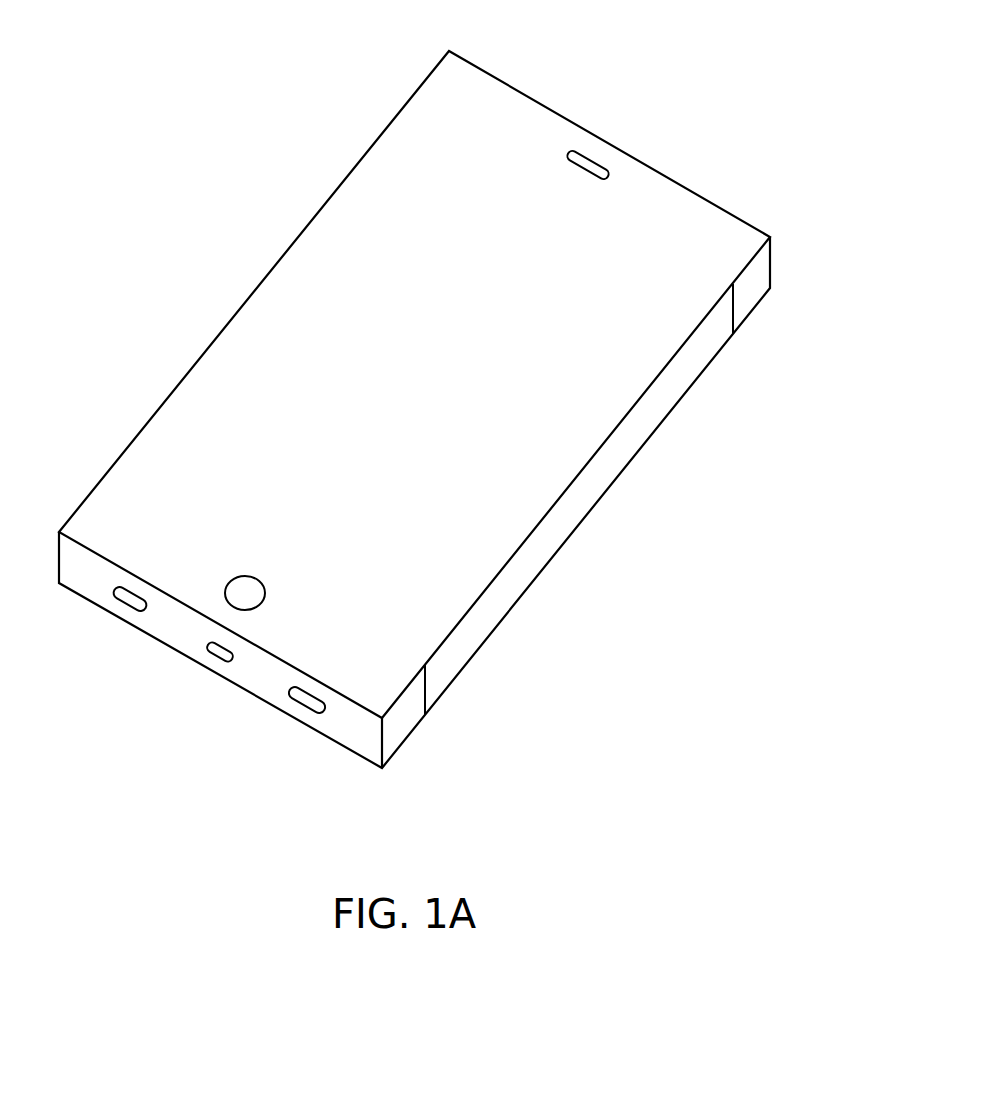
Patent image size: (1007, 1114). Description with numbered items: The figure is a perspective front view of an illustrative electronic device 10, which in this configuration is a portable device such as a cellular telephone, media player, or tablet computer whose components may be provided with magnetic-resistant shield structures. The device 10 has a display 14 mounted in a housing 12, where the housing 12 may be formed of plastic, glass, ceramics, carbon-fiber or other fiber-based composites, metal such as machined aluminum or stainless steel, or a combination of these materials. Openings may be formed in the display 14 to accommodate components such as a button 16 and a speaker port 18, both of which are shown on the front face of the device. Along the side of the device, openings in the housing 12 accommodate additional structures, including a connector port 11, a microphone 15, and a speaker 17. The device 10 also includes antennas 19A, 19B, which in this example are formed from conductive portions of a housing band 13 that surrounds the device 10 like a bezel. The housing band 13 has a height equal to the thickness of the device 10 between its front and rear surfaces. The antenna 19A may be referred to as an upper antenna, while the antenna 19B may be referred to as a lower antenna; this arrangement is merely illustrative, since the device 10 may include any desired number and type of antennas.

The device 10 is at (726, 44).
The connector port 11 is at (217, 657).
The housing 12 is at (771, 238).
The housing band 13 is at (601, 492).
The display 14 is at (284, 318).
The microphone 15 is at (128, 605).
The button 16 is at (265, 598).
The speaker 17 is at (302, 706).
The speaker port 18 is at (589, 158).
The antenna 19A is at (407, 723).
The antenna 19B is at (753, 292).